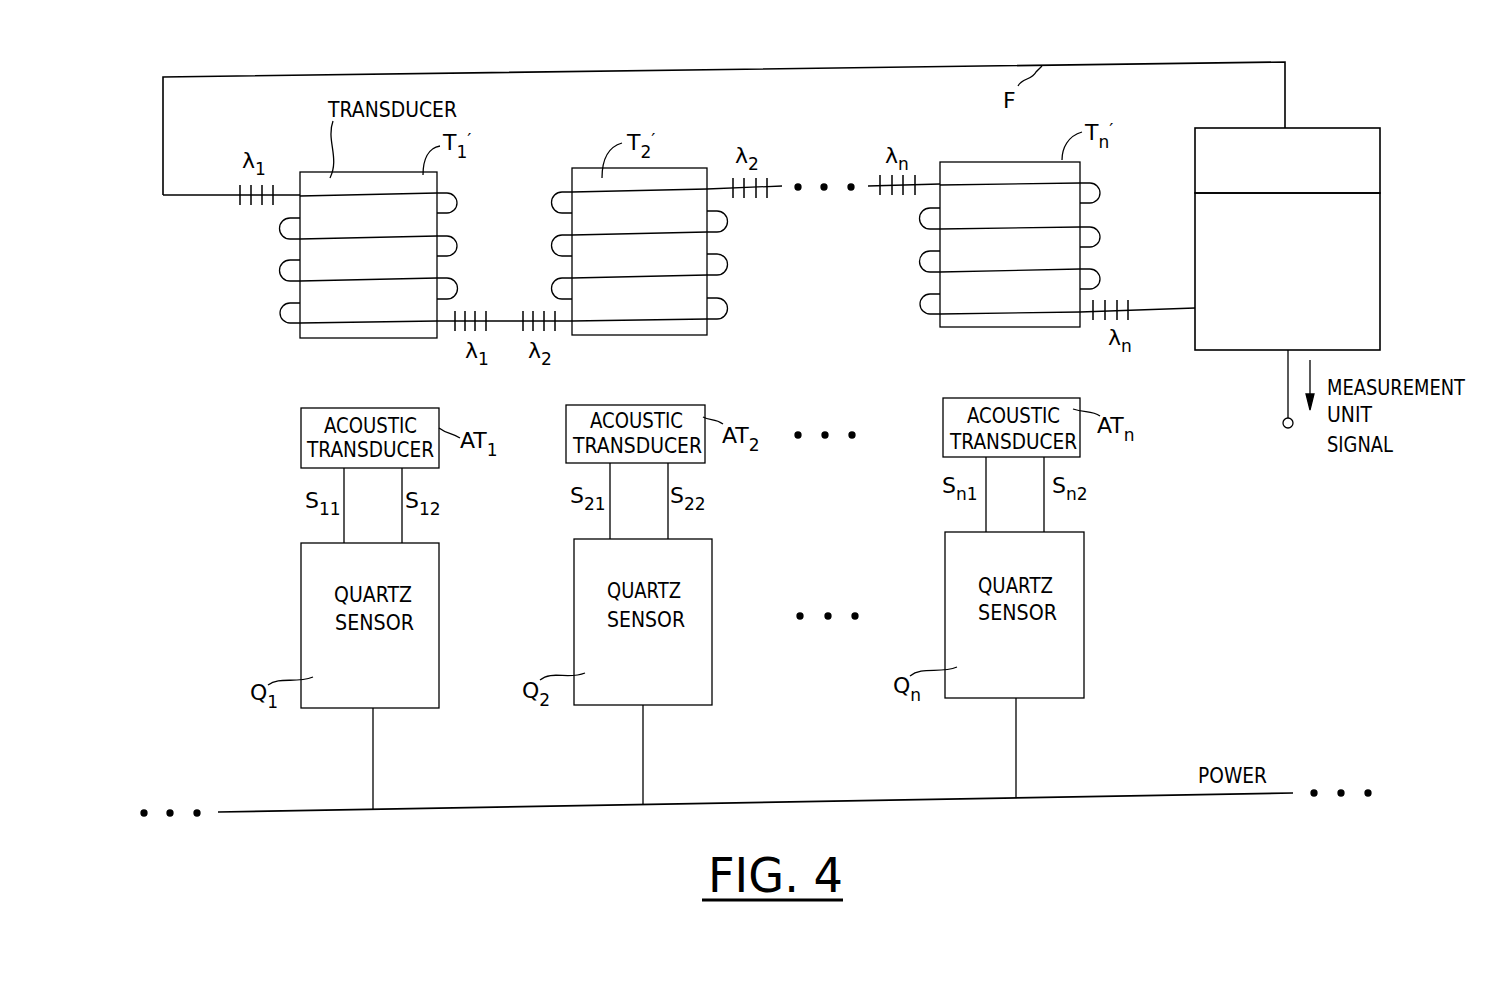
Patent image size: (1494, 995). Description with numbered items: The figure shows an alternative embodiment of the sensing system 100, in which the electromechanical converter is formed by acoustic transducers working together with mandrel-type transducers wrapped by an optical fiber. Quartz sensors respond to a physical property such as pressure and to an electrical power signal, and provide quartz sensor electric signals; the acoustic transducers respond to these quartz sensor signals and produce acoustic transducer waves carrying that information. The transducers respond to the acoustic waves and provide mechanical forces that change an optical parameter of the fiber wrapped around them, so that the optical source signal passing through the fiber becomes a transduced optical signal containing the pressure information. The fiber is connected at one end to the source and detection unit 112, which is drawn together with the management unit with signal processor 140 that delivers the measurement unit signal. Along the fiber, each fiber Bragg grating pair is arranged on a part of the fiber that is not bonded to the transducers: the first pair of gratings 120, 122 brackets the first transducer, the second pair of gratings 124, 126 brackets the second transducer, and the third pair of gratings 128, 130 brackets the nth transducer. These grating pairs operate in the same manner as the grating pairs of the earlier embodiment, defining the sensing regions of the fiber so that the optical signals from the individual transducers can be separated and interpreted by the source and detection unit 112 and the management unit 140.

The sensing system 100 is at (274, 56).
The source and detection unit 112 is at (1375, 158).
The fiber Bragg grating 120 is at (239, 214).
The fiber Bragg grating 122 is at (461, 313).
The fiber Bragg grating 124 is at (533, 305).
The fiber Bragg grating 126 is at (761, 201).
The fiber Bragg grating 128 is at (900, 202).
The fiber Bragg grating 130 is at (1118, 268).
The management unit with signal processor 140 is at (1372, 258).